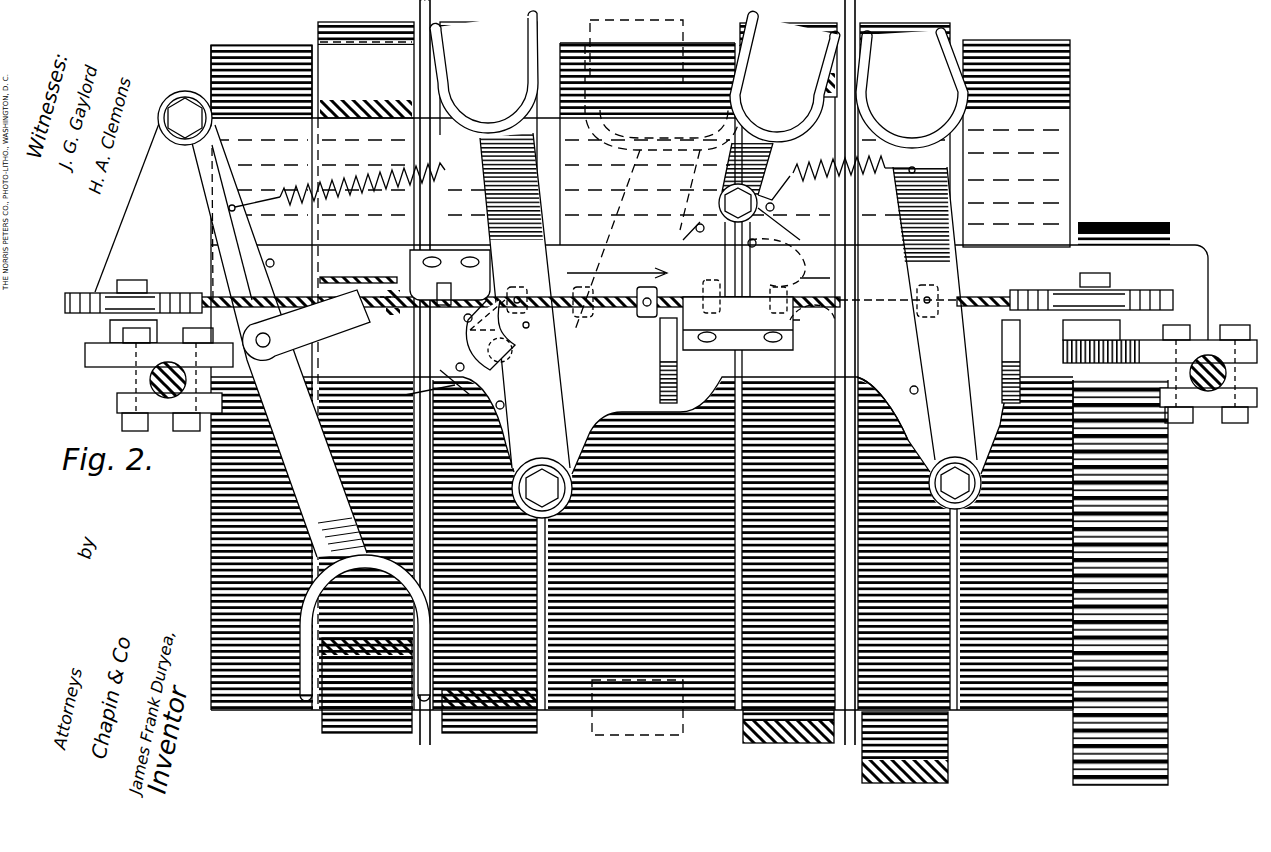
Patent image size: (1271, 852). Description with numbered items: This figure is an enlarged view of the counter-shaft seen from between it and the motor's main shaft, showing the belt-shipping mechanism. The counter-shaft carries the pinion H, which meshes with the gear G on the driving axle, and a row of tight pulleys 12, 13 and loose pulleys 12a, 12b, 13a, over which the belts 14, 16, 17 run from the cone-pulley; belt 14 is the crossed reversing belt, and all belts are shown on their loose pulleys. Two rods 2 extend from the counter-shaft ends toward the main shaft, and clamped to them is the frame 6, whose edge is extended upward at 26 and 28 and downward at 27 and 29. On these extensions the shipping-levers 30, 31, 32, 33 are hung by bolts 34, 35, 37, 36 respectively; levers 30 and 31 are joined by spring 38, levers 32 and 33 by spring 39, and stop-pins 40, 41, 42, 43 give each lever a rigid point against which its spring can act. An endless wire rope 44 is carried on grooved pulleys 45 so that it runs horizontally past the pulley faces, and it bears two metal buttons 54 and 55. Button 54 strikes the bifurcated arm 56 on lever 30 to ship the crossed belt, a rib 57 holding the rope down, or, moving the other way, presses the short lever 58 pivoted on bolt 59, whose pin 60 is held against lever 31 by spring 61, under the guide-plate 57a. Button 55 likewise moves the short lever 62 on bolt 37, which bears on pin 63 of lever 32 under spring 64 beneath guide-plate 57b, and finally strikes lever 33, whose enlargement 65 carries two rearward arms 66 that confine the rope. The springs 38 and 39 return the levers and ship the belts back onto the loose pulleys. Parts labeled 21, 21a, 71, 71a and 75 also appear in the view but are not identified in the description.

The rods 2 is at (130, 380).
The frame 6 is at (80, 332).
The tight pulley 12 is at (657, 377).
The loose pulley 12a is at (486, 125).
The loose pulley 12b is at (785, 76).
The tight pulley 13 is at (1016, 143).
The loose pulley 13a is at (912, 145).
The belt 14 is at (366, 377).
The belt 16 is at (788, 383).
The belt 17 is at (905, 403).
The rod 21 is at (637, 372).
The rack bar 21a is at (660, 370).
The upwardly-extended part 26 is at (173, 206).
The downwardly-extended part 27 is at (490, 372).
The upwardly-extended part 28 is at (700, 222).
The downwardly-extended part 29 is at (948, 338).
The shipping-lever 30 is at (310, 413).
The shipping-lever 31 is at (503, 340).
The shipping-lever 32 is at (730, 170).
The shipping-lever 33 is at (931, 287).
The bolt 34 is at (185, 118).
The bolt 35 is at (568, 455).
The bolt 36 is at (940, 470).
The bolt 37 is at (738, 203).
The spring 38 is at (337, 178).
The spring 39 is at (832, 178).
The stop-pin 40 is at (275, 265).
The stop-pin 41 is at (501, 363).
The stop-pin 42 is at (780, 193).
The stop-pin 43 is at (910, 388).
The endless wire rope 44 is at (70, 293).
The grooved pulleys 45 is at (1130, 273).
The button 54 is at (405, 305).
The button 55 is at (645, 318).
The arm 56 is at (306, 325).
The rib 57 is at (358, 268).
The guide-plate 57a is at (438, 282).
The guide-plate 57b is at (738, 325).
The short lever 58 is at (456, 367).
The bolt 59 is at (455, 395).
The pin 60 is at (466, 322).
The spring 61 is at (417, 400).
The short lever 62 is at (722, 265).
The pin 63 is at (757, 247).
The spring 64 is at (700, 226).
The enlargement 65 is at (850, 340).
The rearwardly-projecting arms 66 is at (809, 304).
The casing section 71 is at (261, 130).
The casing section 71a is at (366, 166).
The clutch member 75 is at (488, 377).
The gear G is at (1168, 590).
The pinion H is at (1122, 226).